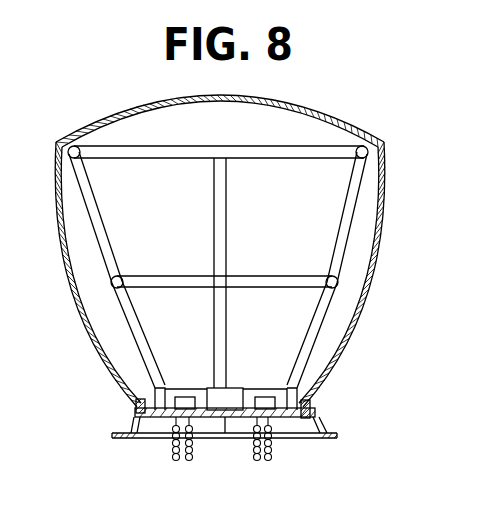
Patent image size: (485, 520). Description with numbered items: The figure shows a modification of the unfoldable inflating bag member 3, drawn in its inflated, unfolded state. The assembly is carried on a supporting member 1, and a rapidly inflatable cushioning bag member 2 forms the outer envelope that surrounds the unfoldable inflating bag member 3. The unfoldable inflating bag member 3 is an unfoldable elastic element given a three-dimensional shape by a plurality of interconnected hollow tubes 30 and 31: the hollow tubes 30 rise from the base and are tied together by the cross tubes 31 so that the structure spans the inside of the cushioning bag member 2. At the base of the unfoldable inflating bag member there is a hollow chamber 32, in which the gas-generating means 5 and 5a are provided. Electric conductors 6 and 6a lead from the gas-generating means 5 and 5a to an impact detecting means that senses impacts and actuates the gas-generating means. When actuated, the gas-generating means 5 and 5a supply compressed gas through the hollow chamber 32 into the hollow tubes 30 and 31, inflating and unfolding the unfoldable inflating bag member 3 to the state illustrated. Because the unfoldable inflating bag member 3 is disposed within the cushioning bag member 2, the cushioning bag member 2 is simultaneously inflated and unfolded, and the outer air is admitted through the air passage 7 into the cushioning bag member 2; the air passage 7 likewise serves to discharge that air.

The supporting member 1 is at (328, 419).
The cushioning bag member 2 is at (391, 198).
The unfoldable inflating bag member 3 is at (218, 230).
The hollow tubes 30 is at (107, 241).
The hollow tubes 31 is at (172, 158).
The hollow chamber 32 is at (236, 388).
The gas-generating means 5 is at (268, 396).
The gas-generating means 5a is at (183, 396).
The electric conductor 6 is at (265, 462).
The electric conductor 6a is at (181, 462).
The air passage 7 is at (225, 433).